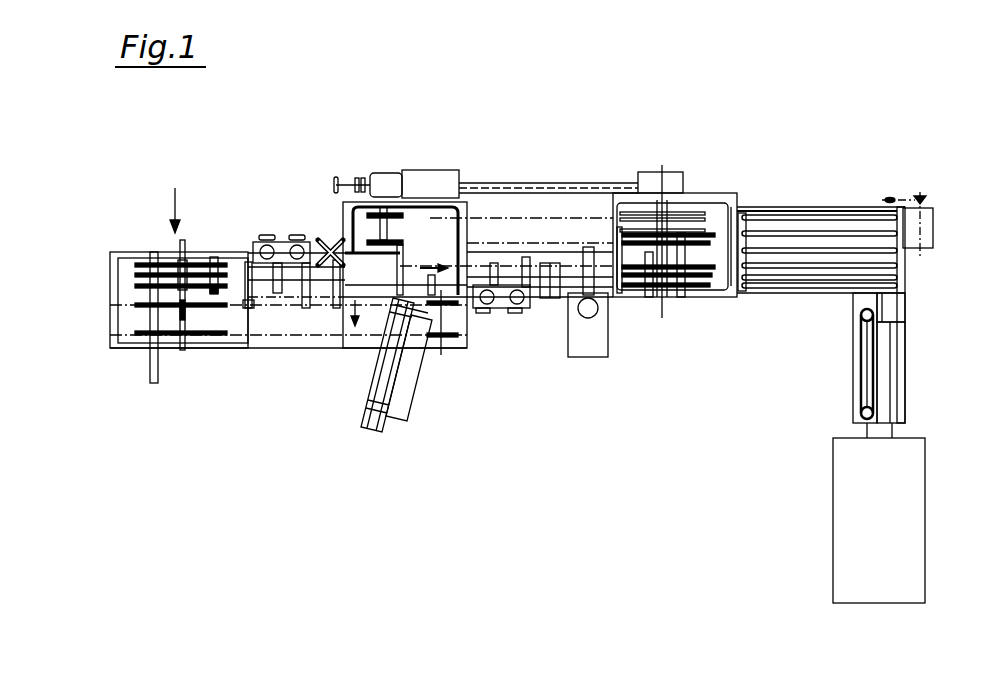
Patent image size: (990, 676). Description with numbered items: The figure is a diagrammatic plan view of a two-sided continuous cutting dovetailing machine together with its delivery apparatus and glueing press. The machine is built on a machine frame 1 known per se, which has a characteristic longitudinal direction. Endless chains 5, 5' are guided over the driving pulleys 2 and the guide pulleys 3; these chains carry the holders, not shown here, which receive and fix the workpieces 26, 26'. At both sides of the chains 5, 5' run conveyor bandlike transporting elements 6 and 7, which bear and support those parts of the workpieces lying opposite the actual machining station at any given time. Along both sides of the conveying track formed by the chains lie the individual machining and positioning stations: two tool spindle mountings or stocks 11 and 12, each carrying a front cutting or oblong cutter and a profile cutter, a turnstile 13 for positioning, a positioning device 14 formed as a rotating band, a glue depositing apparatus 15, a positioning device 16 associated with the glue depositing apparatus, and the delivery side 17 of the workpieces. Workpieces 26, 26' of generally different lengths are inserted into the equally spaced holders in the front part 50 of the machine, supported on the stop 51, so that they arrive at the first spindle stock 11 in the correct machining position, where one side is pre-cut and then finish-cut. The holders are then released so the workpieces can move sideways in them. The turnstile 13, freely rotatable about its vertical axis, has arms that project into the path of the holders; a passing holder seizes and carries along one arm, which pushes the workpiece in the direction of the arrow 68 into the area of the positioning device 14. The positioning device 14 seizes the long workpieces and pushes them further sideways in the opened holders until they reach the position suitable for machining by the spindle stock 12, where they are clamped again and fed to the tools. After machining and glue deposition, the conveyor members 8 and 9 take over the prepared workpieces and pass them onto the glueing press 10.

The machine frame 1 is at (109, 300).
The guide pulleys 3 is at (137, 283).
The stop 51 is at (152, 253).
The front part of the machine 50 is at (177, 200).
The workpiece 26 is at (140, 334).
The workpiece 26' is at (186, 328).
The conveyor bandlike transporting element 6 is at (247, 302).
The tool spindle mounting 11 is at (260, 242).
The endless chain 5 is at (272, 339).
The endless chain 5' is at (306, 338).
The turnstile 13 is at (322, 240).
The arrow 68 is at (352, 318).
The positioning device 14 is at (423, 269).
The conveyor bandlike transporting element 7 is at (504, 237).
The tool spindle mounting 12 is at (498, 305).
The positioning device 16 is at (544, 299).
The glue depositing apparatus 15 is at (600, 347).
The driving pulleys 2 is at (700, 297).
The delivery side 17 is at (718, 228).
The conveyor member 8 is at (831, 247).
The conveyor member 9 is at (882, 365).
The glueing press 10 is at (911, 508).